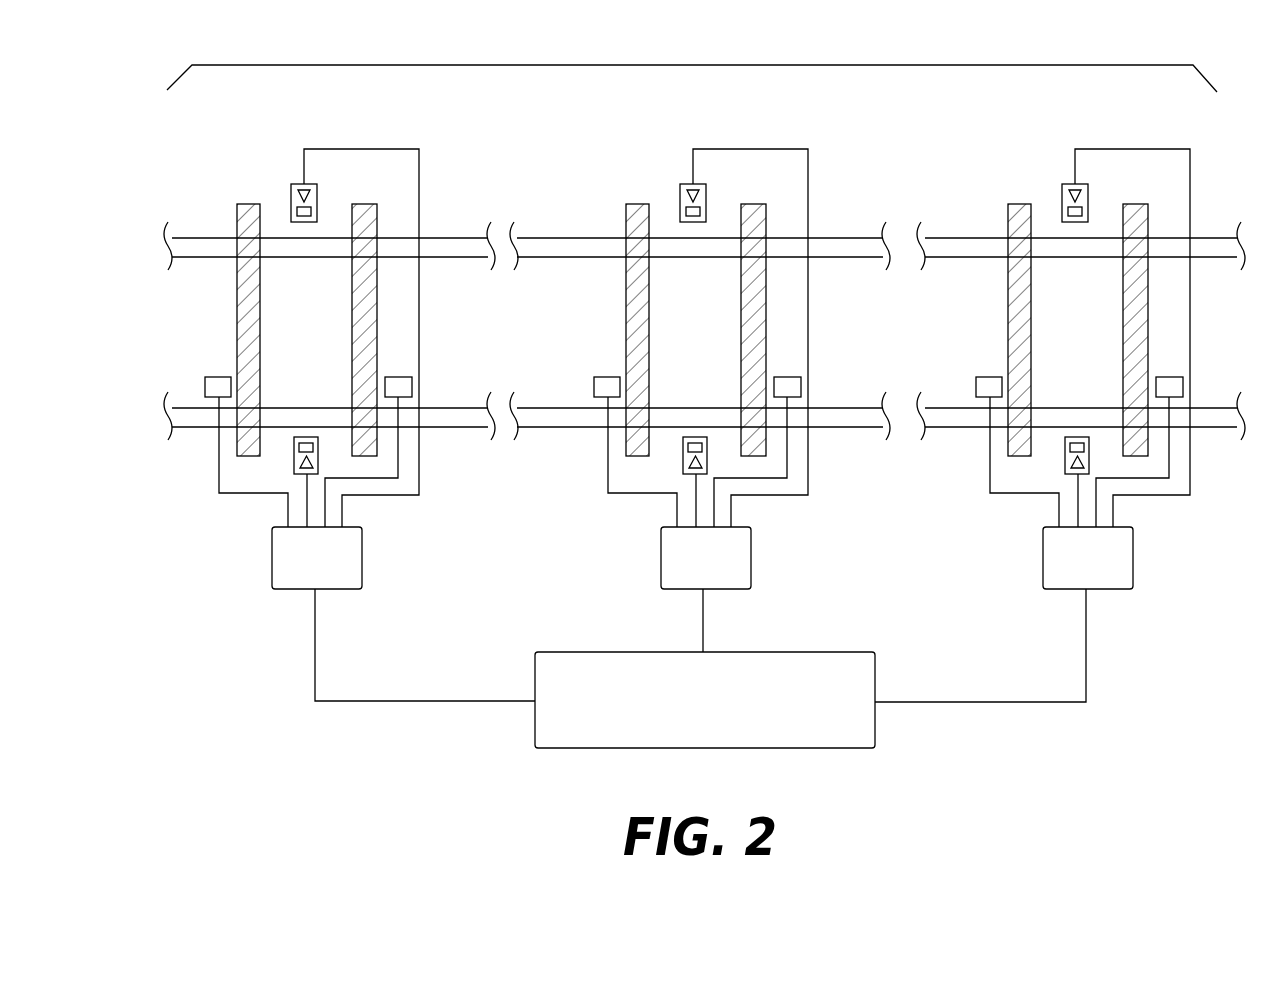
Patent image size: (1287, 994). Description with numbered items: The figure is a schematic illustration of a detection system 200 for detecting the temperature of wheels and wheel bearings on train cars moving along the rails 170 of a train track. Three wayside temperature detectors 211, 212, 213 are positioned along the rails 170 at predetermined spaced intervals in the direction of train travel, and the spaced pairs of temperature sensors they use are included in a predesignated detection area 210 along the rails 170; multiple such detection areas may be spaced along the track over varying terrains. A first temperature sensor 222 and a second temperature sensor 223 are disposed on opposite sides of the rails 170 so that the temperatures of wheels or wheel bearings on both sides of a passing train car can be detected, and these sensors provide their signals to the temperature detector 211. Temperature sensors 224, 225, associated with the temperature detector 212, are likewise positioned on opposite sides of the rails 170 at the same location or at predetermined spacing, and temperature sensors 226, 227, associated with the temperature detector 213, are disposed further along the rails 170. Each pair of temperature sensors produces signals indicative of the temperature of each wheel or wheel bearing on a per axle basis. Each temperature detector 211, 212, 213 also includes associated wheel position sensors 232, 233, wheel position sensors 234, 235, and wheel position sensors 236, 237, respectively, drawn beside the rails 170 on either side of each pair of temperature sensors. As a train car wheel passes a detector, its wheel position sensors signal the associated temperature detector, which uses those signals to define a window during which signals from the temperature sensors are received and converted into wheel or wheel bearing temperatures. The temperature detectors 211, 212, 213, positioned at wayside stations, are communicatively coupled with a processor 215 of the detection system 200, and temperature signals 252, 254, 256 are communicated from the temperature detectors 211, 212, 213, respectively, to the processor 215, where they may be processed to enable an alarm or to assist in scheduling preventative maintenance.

The detection system 200 is at (161, 127).
The detection area 210 is at (707, 64).
The rails 170 is at (206, 237).
The temperature detector 211 is at (298, 571).
The temperature detector 212 is at (706, 558).
The temperature detector 213 is at (1088, 558).
The processor 215 is at (686, 711).
The first temperature sensor 222 is at (308, 437).
The second temperature sensor 223 is at (292, 193).
The temperature sensor 224 is at (687, 410).
The temperature sensor 225 is at (659, 178).
The temperature sensor 226 is at (1081, 416).
The temperature sensor 227 is at (1046, 178).
The wheel position sensor 232 is at (213, 377).
The wheel position sensor 233 is at (398, 377).
The wheel position sensor 234 is at (593, 360).
The wheel position sensor 235 is at (790, 350).
The wheel position sensor 236 is at (976, 356).
The wheel position sensor 237 is at (1171, 356).
The temperature signal 252 is at (455, 701).
The temperature signal 254 is at (705, 620).
The temperature signal 256 is at (968, 702).